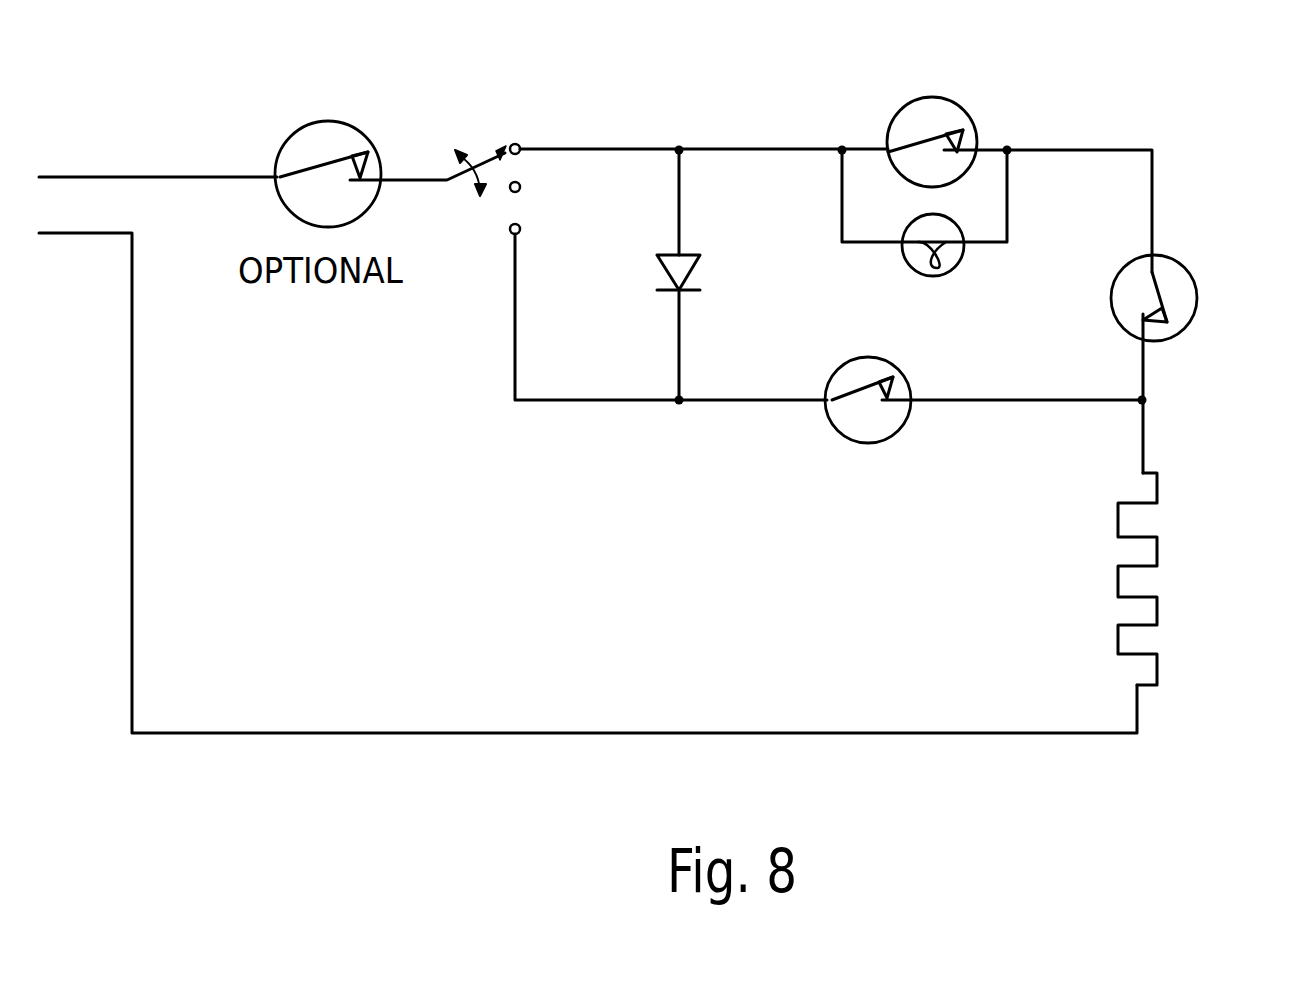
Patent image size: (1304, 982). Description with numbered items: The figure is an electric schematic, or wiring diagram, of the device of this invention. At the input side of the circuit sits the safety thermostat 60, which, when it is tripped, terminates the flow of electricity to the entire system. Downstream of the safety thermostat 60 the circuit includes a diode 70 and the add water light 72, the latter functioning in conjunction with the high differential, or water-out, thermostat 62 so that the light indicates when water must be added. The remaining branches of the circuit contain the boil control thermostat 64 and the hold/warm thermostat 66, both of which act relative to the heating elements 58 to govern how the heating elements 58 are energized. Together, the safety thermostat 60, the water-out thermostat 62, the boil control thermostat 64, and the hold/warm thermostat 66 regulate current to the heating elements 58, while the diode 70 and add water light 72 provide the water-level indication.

The heating elements 58 is at (1177, 538).
The safety thermostat 60 is at (345, 127).
The high differential (water-out) thermostat 62 is at (953, 112).
The boil control thermostat 64 is at (1196, 275).
The hold/warm thermostat 66 is at (897, 428).
The diode 70 is at (698, 263).
The add water light 72 is at (957, 262).